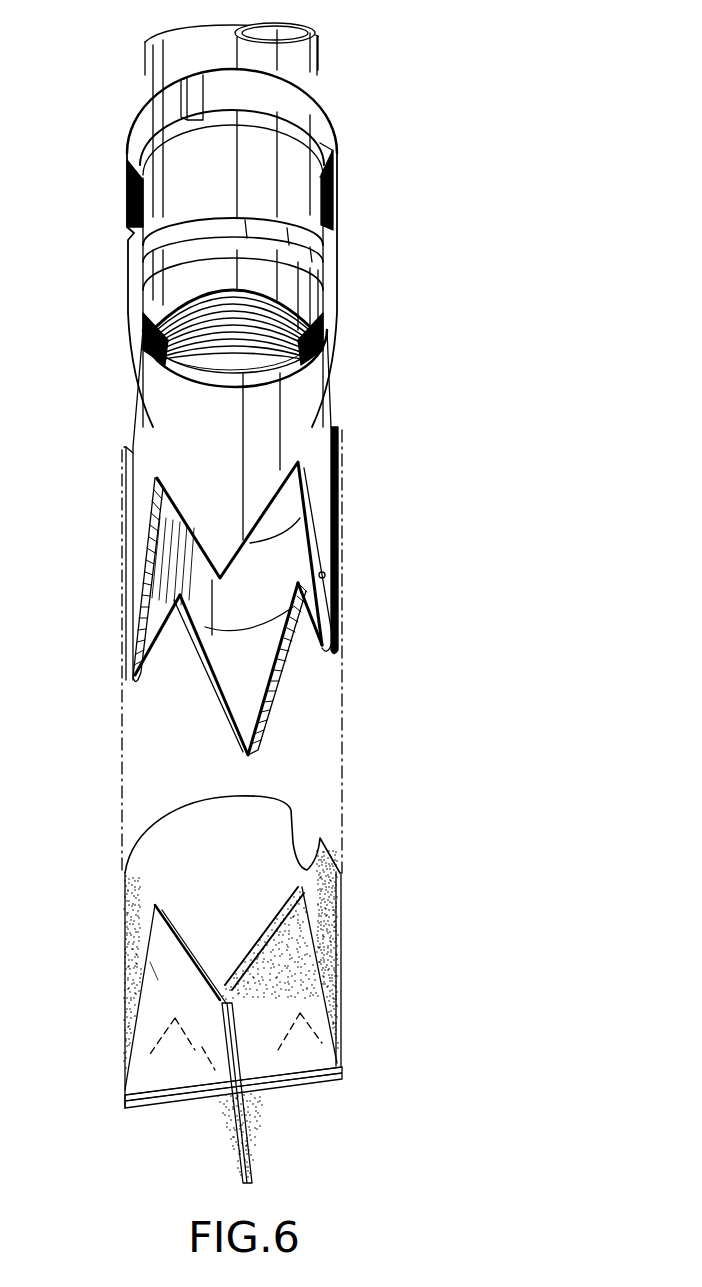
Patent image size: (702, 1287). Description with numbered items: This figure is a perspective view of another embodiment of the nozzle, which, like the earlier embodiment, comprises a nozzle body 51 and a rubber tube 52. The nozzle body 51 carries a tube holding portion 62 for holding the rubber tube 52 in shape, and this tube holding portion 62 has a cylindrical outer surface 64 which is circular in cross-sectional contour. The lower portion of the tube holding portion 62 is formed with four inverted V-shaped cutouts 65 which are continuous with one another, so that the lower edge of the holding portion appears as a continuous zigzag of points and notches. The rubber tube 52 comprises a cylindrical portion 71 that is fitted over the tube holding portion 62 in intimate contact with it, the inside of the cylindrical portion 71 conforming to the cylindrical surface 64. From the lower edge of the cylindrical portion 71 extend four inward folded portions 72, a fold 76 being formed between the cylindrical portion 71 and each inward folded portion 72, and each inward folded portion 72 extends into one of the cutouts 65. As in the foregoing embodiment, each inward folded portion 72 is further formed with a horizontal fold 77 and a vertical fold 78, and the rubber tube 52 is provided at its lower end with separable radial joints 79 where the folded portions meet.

The nozzle body 51 is at (322, 82).
The rubber tube 52 is at (342, 935).
The tube holding portion 62 is at (338, 527).
The cylindrical outer surface 64 is at (160, 430).
The inverted V-shaped cutouts 65 is at (325, 575).
The cylindrical portion 71 is at (178, 838).
The inward folded portions 72 is at (315, 978).
The fold 76 is at (340, 960).
The horizontal fold 77 is at (152, 1105).
The vertical fold 78 is at (212, 1050).
The separable radial joints 79 is at (168, 1096).